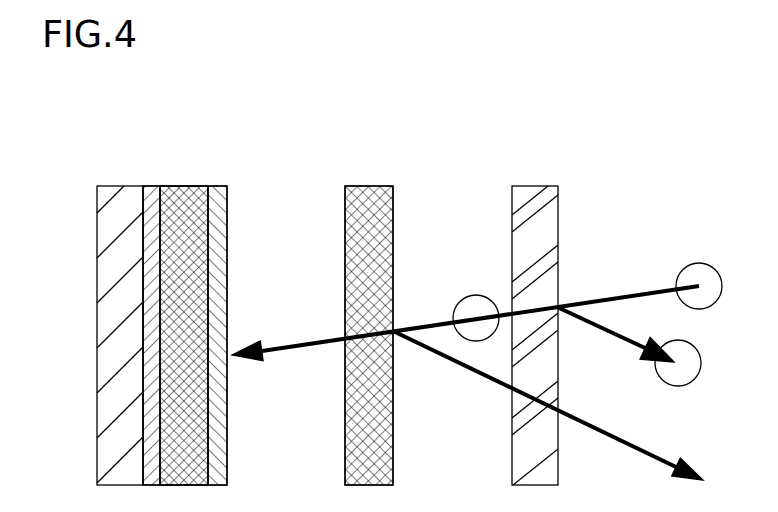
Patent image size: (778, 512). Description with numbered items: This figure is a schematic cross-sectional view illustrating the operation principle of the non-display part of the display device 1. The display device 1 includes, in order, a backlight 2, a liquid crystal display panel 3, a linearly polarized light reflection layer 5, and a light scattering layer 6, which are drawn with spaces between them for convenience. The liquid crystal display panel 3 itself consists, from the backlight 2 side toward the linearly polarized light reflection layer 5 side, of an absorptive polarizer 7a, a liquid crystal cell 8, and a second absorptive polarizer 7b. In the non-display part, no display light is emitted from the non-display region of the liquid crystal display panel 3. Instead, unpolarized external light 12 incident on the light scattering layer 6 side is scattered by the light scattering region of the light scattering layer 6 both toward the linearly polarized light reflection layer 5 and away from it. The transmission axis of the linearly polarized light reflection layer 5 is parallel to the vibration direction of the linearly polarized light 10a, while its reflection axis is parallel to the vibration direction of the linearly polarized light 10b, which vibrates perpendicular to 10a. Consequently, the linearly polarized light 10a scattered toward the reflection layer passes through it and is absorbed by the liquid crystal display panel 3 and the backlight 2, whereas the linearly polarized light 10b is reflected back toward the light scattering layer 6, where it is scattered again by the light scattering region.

The display device 1 is at (70, 166).
The backlight 2 is at (118, 192).
The liquid crystal display panel 3 is at (238, 110).
The absorptive polarizer 7a is at (147, 195).
The liquid crystal cell 8 is at (193, 195).
The absorptive polarizer 7b is at (217, 195).
The linearly polarized light reflection layer 5 is at (365, 197).
The light scattering layer 6 is at (530, 197).
The linearly polarized light 10a is at (295, 387).
The linearly polarized light 10b is at (461, 352).
The external light 12 is at (486, 359).